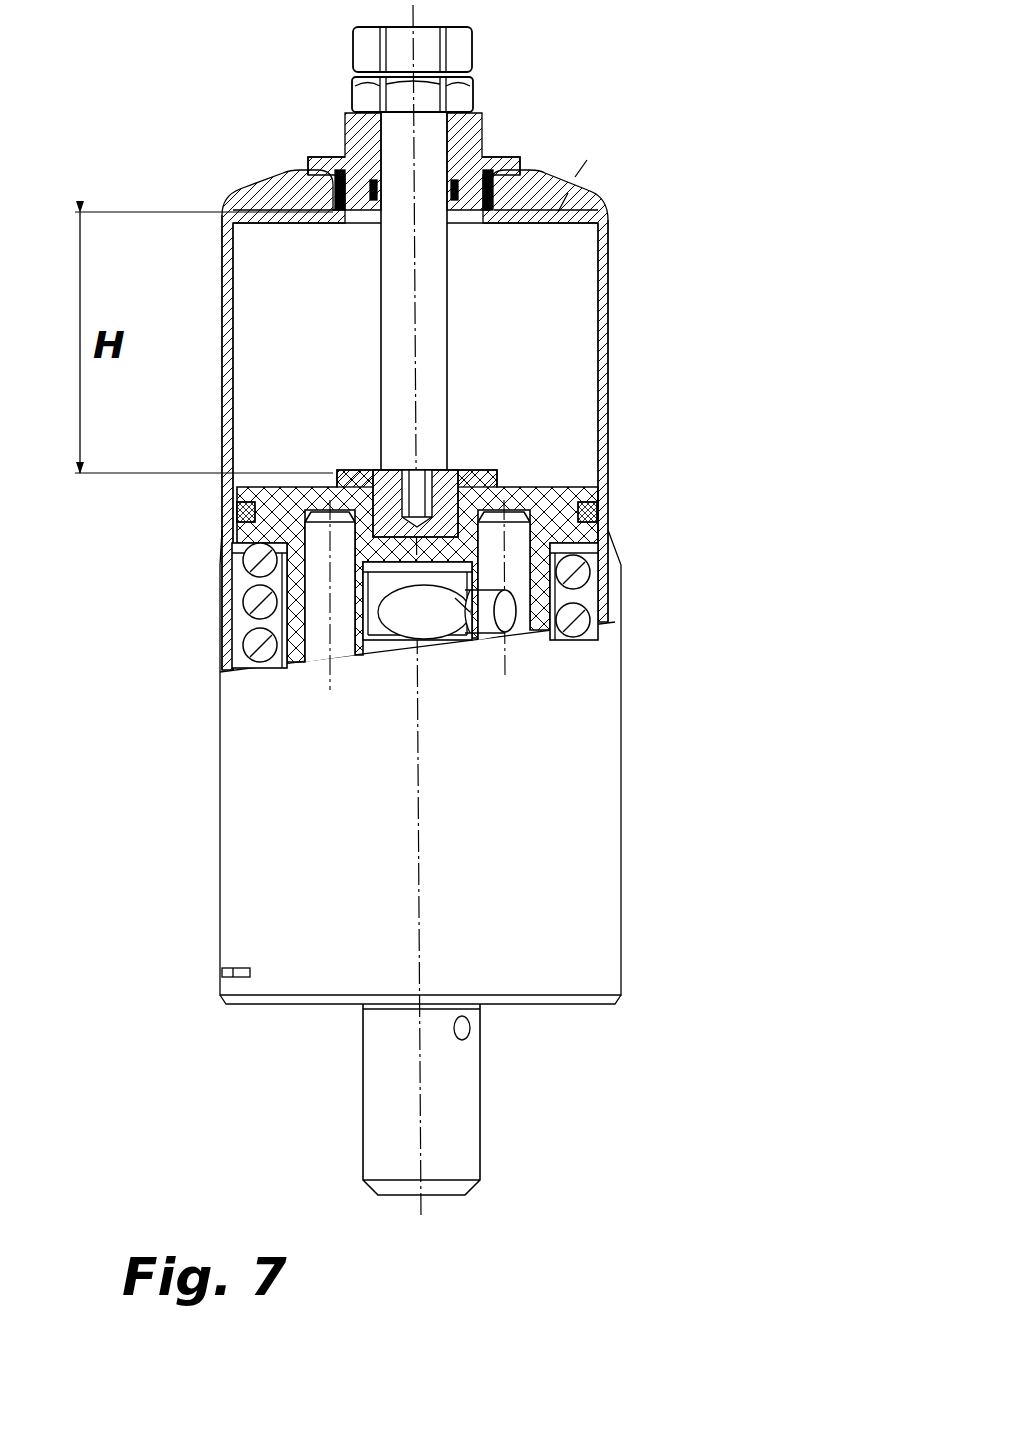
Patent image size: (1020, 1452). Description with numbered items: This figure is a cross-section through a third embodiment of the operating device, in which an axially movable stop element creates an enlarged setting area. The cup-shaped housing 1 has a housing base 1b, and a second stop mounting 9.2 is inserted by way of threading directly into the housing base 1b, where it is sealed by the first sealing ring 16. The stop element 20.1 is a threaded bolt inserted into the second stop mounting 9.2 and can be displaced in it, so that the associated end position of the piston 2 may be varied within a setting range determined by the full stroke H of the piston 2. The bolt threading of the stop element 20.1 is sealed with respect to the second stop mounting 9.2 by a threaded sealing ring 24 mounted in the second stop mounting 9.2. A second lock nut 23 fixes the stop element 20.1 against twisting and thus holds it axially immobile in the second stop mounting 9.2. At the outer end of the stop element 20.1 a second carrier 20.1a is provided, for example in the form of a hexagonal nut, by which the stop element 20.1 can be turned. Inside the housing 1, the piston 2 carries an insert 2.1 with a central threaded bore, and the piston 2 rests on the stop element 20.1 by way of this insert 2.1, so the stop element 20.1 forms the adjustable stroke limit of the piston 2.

The housing 1 is at (628, 553).
The housing base 1b is at (262, 187).
The piston 2 is at (555, 512).
The insert 2.1 is at (443, 493).
The second stop mounting 9.2 is at (465, 143).
The first sealing ring 16 is at (307, 163).
The stop element 20.1 is at (425, 312).
The second carrier 20.1a is at (423, 55).
The second lock nut 23 is at (425, 100).
The threaded sealing ring 24 is at (457, 195).